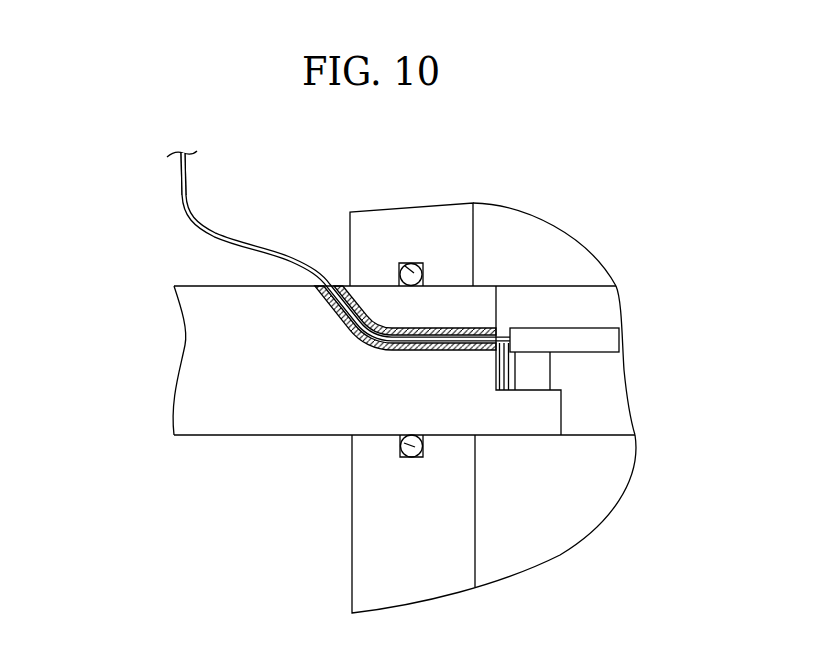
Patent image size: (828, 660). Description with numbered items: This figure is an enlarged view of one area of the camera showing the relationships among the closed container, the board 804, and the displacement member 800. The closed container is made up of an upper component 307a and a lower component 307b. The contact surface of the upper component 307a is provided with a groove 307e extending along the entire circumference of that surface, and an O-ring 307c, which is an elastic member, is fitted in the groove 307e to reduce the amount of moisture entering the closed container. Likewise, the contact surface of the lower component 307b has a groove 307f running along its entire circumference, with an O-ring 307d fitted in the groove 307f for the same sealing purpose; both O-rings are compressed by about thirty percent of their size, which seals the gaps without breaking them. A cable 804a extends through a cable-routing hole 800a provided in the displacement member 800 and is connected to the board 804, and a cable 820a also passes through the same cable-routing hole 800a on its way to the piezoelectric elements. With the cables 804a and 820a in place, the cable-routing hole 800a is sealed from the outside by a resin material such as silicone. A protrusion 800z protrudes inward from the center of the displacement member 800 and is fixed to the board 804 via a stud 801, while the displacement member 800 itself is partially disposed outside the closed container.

The displacement member 800 is at (202, 356).
The cable-routing hole 800a is at (338, 326).
The protrusion 800z is at (522, 408).
The stud 801 is at (542, 372).
The board 804 is at (609, 338).
The cable 804a is at (197, 210).
The cable 820a is at (180, 185).
The upper component 307a is at (390, 218).
The lower component 307b is at (364, 566).
The O-ring 307c is at (399, 266).
The O-ring 307d is at (399, 451).
The groove 307e is at (423, 272).
The groove 307f is at (412, 460).